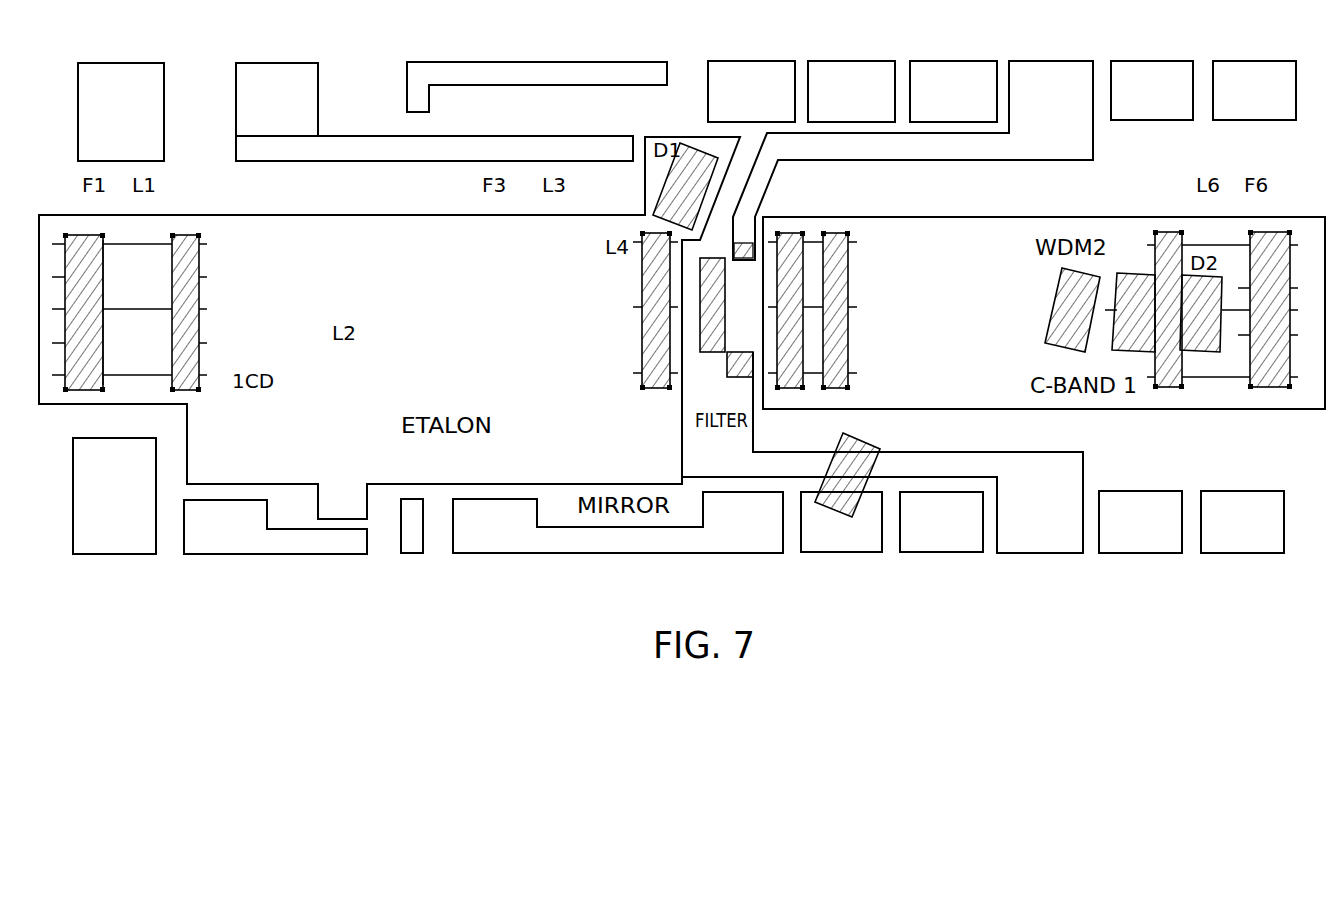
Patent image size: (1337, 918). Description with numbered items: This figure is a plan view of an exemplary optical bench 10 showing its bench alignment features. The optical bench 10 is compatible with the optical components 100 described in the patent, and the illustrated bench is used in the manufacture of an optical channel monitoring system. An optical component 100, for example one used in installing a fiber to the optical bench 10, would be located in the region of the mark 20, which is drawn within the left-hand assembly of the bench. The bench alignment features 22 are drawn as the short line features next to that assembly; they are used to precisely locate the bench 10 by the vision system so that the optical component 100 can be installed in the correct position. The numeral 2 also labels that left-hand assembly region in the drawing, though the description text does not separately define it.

The optical bench 10 is at (902, 57).
The collimator assembly 2 is at (129, 302).
The mark 20 is at (95, 296).
The optical component 100 is at (104, 268).
The bench alignment features 22 is at (106, 278).